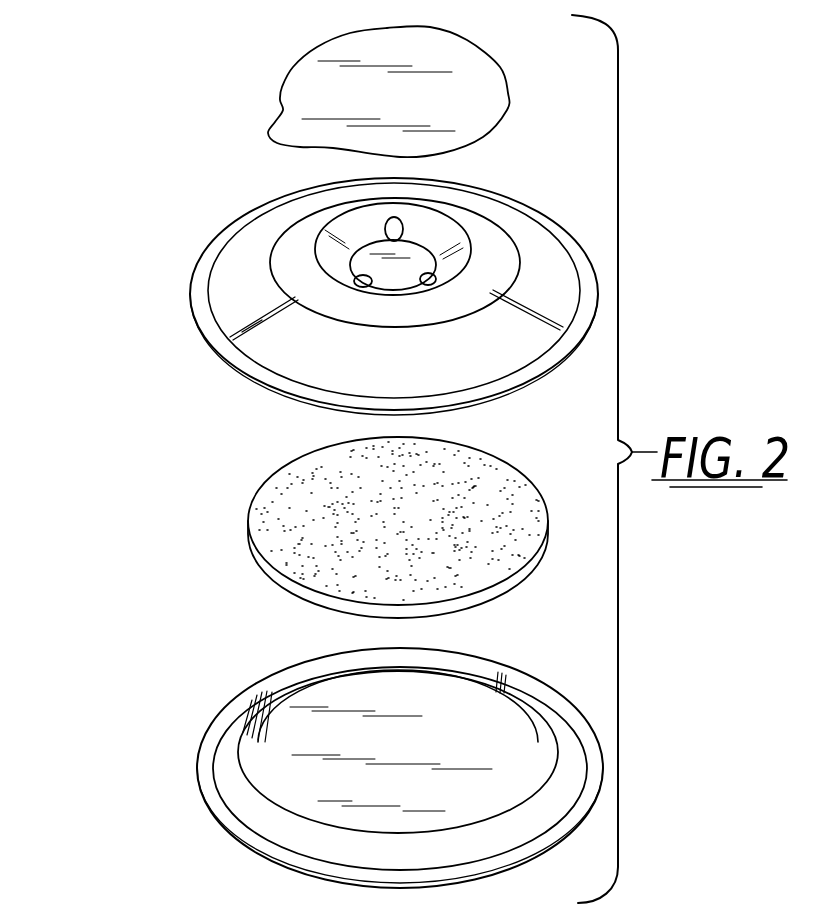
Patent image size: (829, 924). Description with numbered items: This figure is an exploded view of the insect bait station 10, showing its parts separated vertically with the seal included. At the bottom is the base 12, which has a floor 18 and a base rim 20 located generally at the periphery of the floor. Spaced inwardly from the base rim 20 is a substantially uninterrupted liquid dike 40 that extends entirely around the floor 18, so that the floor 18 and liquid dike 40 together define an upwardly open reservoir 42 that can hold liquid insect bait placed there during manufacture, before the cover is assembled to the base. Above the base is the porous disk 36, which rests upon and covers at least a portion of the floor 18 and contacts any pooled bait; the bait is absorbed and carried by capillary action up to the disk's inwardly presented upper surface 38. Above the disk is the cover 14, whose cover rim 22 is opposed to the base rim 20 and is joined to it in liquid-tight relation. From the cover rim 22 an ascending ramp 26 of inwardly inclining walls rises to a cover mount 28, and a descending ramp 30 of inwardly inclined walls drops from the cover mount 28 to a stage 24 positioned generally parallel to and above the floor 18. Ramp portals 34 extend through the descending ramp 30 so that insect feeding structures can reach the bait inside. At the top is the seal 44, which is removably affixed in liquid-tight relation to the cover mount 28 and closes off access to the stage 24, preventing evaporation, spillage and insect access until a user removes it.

The insect bait station 10 is at (120, 148).
The base 12 is at (217, 710).
The cover 14 is at (578, 243).
The floor 18 is at (473, 695).
The base rim 20 is at (208, 778).
The cover rim 22 is at (200, 288).
The stage 24 is at (425, 247).
The ascending ramp 26 is at (270, 353).
The cover mount 28 is at (441, 308).
The descending ramp 30 is at (452, 246).
The ramp portals 34 is at (353, 278).
The porous disk 36 is at (247, 530).
The upper surface 38 is at (313, 480).
The liquid dike 40 is at (570, 753).
The reservoir 42 is at (289, 717).
The seal 44 is at (300, 55).